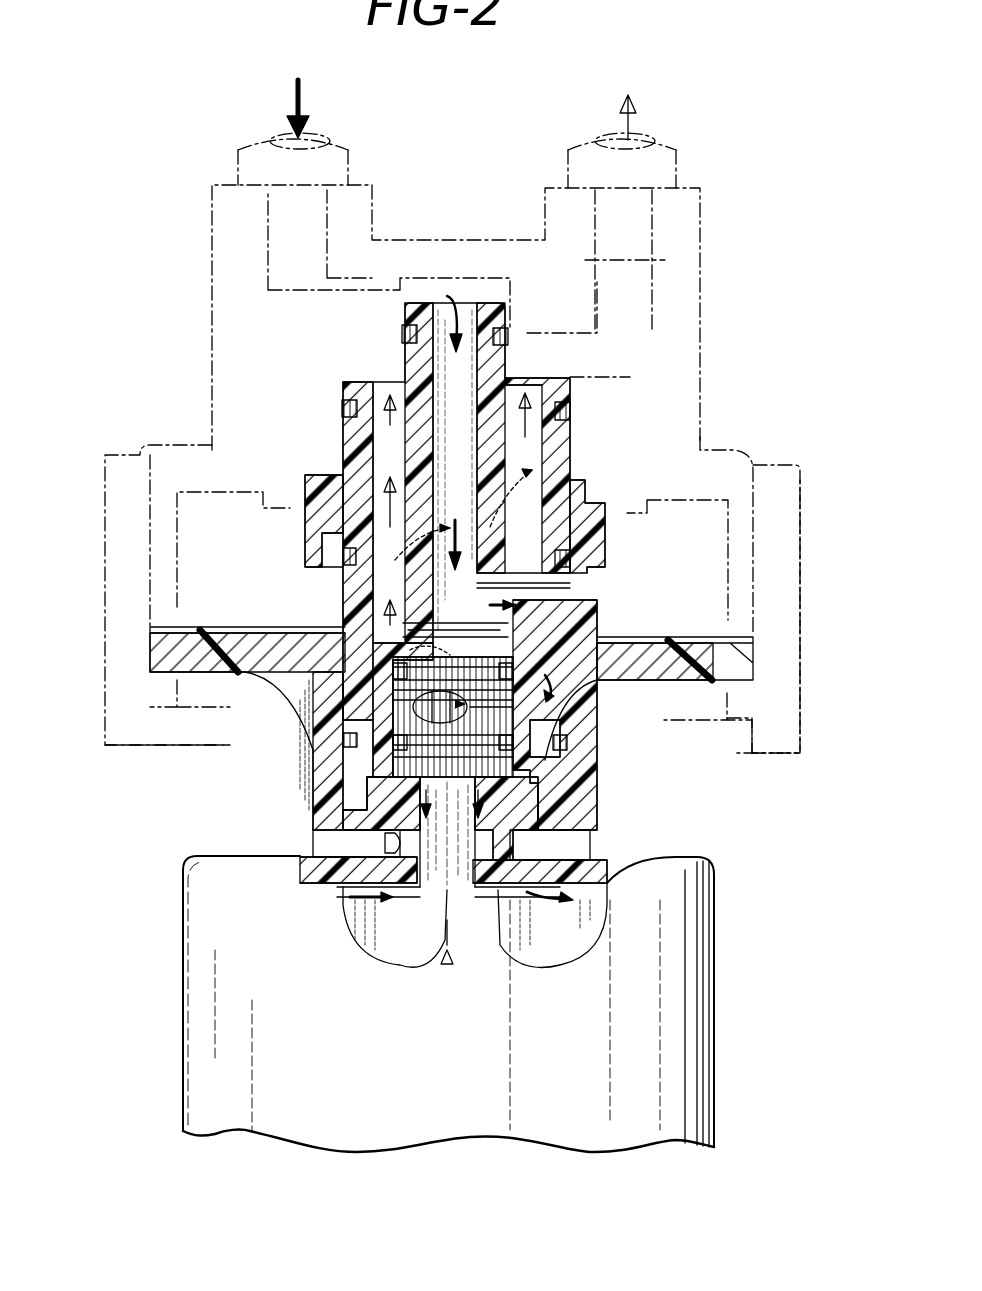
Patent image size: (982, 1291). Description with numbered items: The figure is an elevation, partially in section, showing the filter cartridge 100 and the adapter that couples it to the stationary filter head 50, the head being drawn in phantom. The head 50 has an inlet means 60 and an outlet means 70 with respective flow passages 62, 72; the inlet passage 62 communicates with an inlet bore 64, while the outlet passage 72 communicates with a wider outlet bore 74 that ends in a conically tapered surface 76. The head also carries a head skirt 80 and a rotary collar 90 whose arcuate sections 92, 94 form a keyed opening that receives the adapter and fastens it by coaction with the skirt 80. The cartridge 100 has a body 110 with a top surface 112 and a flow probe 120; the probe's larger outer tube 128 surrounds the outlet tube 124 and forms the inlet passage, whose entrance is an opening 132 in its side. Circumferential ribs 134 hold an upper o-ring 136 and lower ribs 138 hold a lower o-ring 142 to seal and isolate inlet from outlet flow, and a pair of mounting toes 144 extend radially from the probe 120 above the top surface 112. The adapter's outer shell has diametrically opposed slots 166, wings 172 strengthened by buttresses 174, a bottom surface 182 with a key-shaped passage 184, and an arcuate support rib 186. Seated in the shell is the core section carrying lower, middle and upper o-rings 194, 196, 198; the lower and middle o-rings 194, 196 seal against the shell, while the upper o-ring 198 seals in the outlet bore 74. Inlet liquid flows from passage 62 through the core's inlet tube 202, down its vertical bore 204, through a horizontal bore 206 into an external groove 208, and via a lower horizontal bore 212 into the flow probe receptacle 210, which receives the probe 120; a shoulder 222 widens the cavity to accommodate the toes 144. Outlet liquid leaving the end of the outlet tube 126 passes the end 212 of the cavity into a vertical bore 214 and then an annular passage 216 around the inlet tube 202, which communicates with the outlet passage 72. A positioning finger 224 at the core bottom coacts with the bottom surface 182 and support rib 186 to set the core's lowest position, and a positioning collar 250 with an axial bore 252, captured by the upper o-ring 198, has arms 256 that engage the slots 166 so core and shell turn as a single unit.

The filter head 50 is at (185, 400).
The inlet means 60 is at (243, 120).
The inlet flow passage 62 is at (340, 210).
The inlet bore 64 is at (415, 290).
The outlet means 70 is at (665, 148).
The outlet passage 72 is at (665, 258).
The outlet bore 74 is at (660, 372).
The conically tapered surface 76 is at (640, 470).
The head skirt 80 is at (775, 510).
The rotary collar 90 is at (800, 725).
The arcuate section 92 is at (126, 748).
The arcuate section 94 is at (755, 755).
The cartridge 100 is at (506, 985).
The cartridge body 110 is at (695, 1035).
The top surface 112 is at (690, 857).
The flow probe 120 is at (560, 848).
The outlet tube 124 is at (500, 930).
The outlet tube 126 is at (540, 650).
The outer tube 128 is at (570, 750).
The opening 132 is at (455, 690).
The circumferential ribs 134 is at (345, 720).
The upper o-ring 136 is at (560, 650).
The lower circumferential ribs 138 is at (345, 760).
The lower o-ring 142 is at (560, 650).
The mounting toes 144 is at (367, 805).
The slots 166 is at (330, 545).
The wings 172 is at (225, 625).
The buttresses 174 is at (285, 690).
The bottom surface 182 is at (580, 890).
The key shaped passage 184 is at (385, 845).
The arcuate support rib 186 is at (340, 822).
The lower o-ring 194 is at (575, 700).
The middle o-ring 196 is at (540, 600).
The upper o-ring 198 is at (572, 412).
The inlet tube 202 is at (530, 365).
The vertical bore 204 is at (468, 330).
The horizontal bore 206 is at (545, 640).
The external groove 208 is at (560, 640).
The flow probe receptacle 210 is at (560, 840).
The lower horizontal bore 212 is at (340, 690).
The vertical bore 214 is at (373, 600).
The annular passage 216 is at (380, 400).
The shoulder 222 is at (535, 780).
The positioning finger 224 is at (545, 795).
The positioning collar 250 is at (303, 495).
The axial bore 252 is at (355, 460).
The arms 256 is at (305, 545).